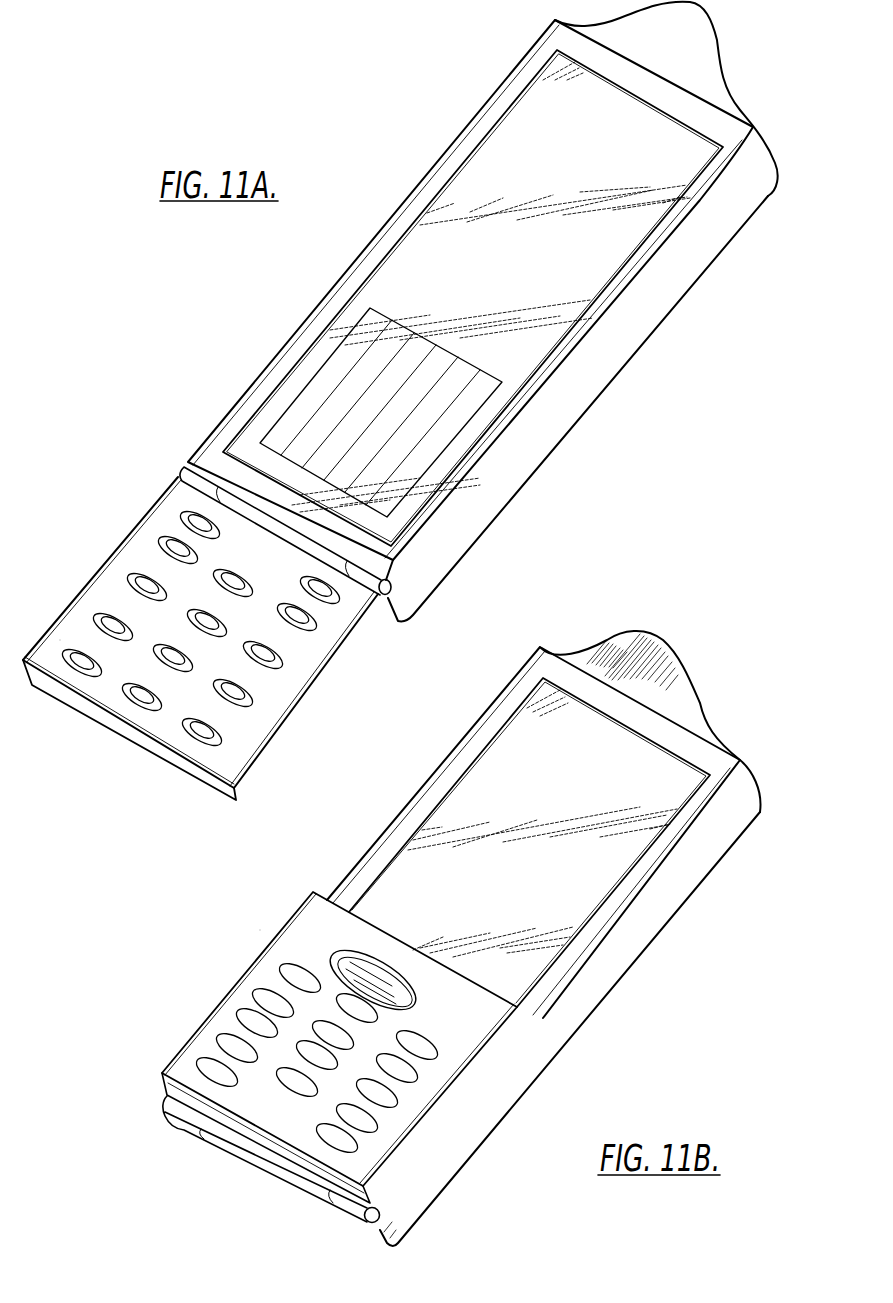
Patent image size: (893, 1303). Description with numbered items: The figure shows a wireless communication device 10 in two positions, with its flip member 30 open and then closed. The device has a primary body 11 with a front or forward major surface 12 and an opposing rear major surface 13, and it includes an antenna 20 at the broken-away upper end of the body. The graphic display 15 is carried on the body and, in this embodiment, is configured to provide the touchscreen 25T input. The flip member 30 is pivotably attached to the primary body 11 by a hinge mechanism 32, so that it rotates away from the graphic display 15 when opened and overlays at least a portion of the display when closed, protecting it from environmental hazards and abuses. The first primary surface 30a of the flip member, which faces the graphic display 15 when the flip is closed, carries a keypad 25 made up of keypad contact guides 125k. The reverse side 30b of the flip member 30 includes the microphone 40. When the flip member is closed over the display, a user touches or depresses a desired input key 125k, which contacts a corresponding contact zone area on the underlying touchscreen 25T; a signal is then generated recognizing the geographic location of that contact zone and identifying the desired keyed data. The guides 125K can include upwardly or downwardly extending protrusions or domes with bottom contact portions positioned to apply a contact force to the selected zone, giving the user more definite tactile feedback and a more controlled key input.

In FIG. 11A, the wireless communication device 10 is at (688, 338).
In FIG. 11B, the wireless communication device 10 is at (135, 1019).
In FIG. 11A, the primary body 11 is at (725, 230).
In FIG. 11B, the primary body 11 is at (543, 946).
In FIG. 11A, the front or forward major surface 12 is at (480, 397).
In FIG. 11A, the rear major surface 13 is at (587, 410).
In FIG. 11B, the rear major surface 13 is at (529, 842).
In FIG. 11A, the graphic display 15 is at (507, 163).
In FIG. 11B, the graphic display 15 is at (637, 808).
In FIG. 11A, the antenna 20 is at (700, 62).
In FIG. 11B, the antenna 20 is at (643, 632).
In FIG. 11A, the keypad 25 is at (137, 578).
In FIG. 11A, the touchscreen 25T is at (308, 420).
In FIG. 11A, the flip member 30 is at (333, 662).
In FIG. 11B, the flip member 30 is at (252, 1003).
In FIG. 11A, the first primary surface 30a is at (267, 697).
In FIG. 11B, the reverse side 30b is at (302, 973).
In FIG. 11A, the hinge mechanism 32 is at (296, 531).
In FIG. 11B, the hinge mechanism 32 is at (271, 1159).
In FIG. 11B, the microphone 40 is at (387, 982).
In FIG. 11A, the keypad contact guides 125k is at (202, 730).
In FIG. 11B, the guides 125K is at (218, 1072).